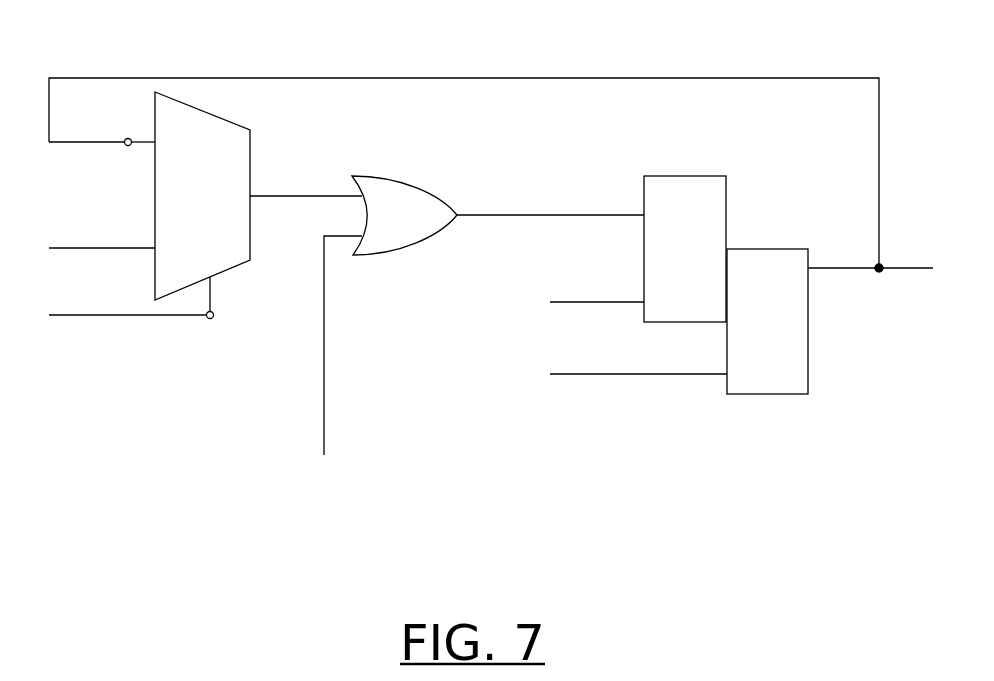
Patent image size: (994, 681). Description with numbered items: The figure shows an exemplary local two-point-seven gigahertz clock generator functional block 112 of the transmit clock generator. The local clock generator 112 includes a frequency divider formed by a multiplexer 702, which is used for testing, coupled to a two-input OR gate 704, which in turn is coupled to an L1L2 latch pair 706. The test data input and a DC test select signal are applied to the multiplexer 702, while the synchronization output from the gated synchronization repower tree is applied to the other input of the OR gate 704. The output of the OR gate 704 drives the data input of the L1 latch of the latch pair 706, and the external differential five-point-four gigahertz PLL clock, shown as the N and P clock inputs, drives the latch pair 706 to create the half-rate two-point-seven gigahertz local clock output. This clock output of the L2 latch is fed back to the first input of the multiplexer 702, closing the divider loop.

The Local 2.7 GHz Clock Generator functional block 112 is at (486, 32).
The multiplexer 702 is at (202, 196).
The two input OR gate 704 is at (404, 215).
The L1L2 latch pair 706 is at (733, 285).